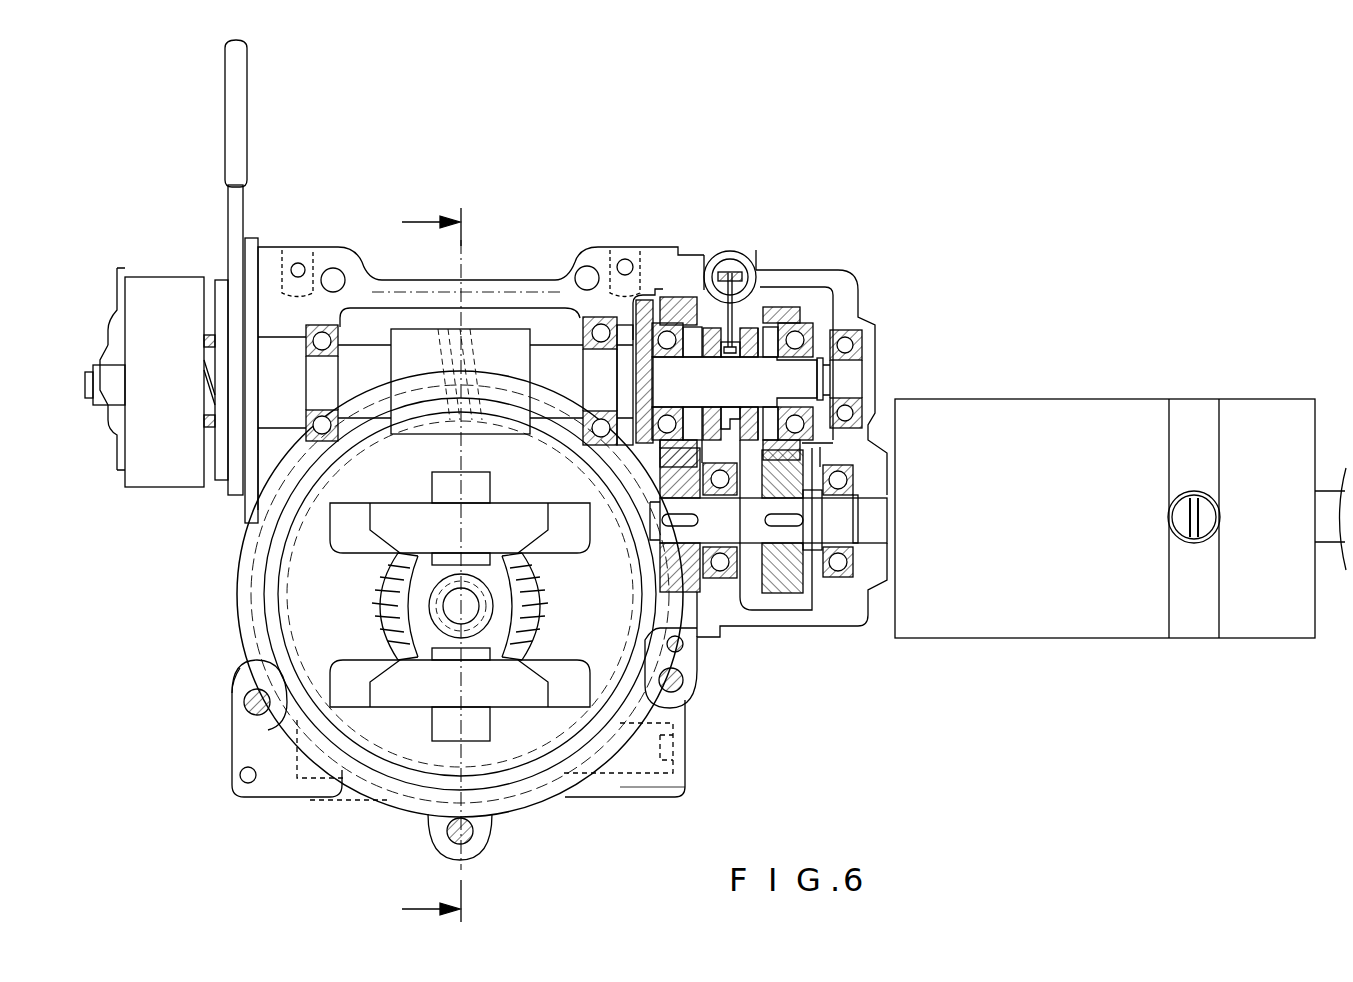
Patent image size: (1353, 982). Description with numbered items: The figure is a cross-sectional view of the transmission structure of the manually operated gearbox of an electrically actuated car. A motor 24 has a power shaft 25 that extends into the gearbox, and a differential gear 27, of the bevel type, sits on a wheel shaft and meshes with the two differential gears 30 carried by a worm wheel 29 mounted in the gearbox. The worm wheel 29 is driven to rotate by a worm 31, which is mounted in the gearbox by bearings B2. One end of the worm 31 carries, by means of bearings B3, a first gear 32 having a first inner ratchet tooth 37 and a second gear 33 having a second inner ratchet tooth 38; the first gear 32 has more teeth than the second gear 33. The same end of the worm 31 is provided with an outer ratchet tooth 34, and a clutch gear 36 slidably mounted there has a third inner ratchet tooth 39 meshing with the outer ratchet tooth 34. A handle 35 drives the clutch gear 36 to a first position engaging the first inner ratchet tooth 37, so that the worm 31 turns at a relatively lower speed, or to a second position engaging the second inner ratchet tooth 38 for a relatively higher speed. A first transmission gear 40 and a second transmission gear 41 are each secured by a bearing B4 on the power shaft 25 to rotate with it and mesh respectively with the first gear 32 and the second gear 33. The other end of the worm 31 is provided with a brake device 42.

The motor 24 is at (1045, 415).
The power shaft 25 is at (678, 505).
The differential gear 27 is at (370, 598).
The worm wheel 29 is at (315, 500).
The differential gears 30 is at (390, 515).
The worm 31 is at (428, 338).
The first gear 32 is at (667, 297).
The second gear 33 is at (788, 307).
The outer ratchet tooth 34 is at (713, 358).
The handle 35 is at (730, 260).
The clutch gear 36 is at (712, 330).
The first inner ratchet tooth 37 is at (692, 328).
The second inner ratchet tooth 38 is at (773, 330).
The third inner ratchet tooth 39 is at (737, 358).
The first transmission gear 40 is at (677, 585).
The second transmission gear 41 is at (782, 590).
The brake device 42 is at (190, 290).
The bearings B2 is at (306, 412).
The bearings B3 is at (802, 318).
The bearing B4 is at (720, 580).